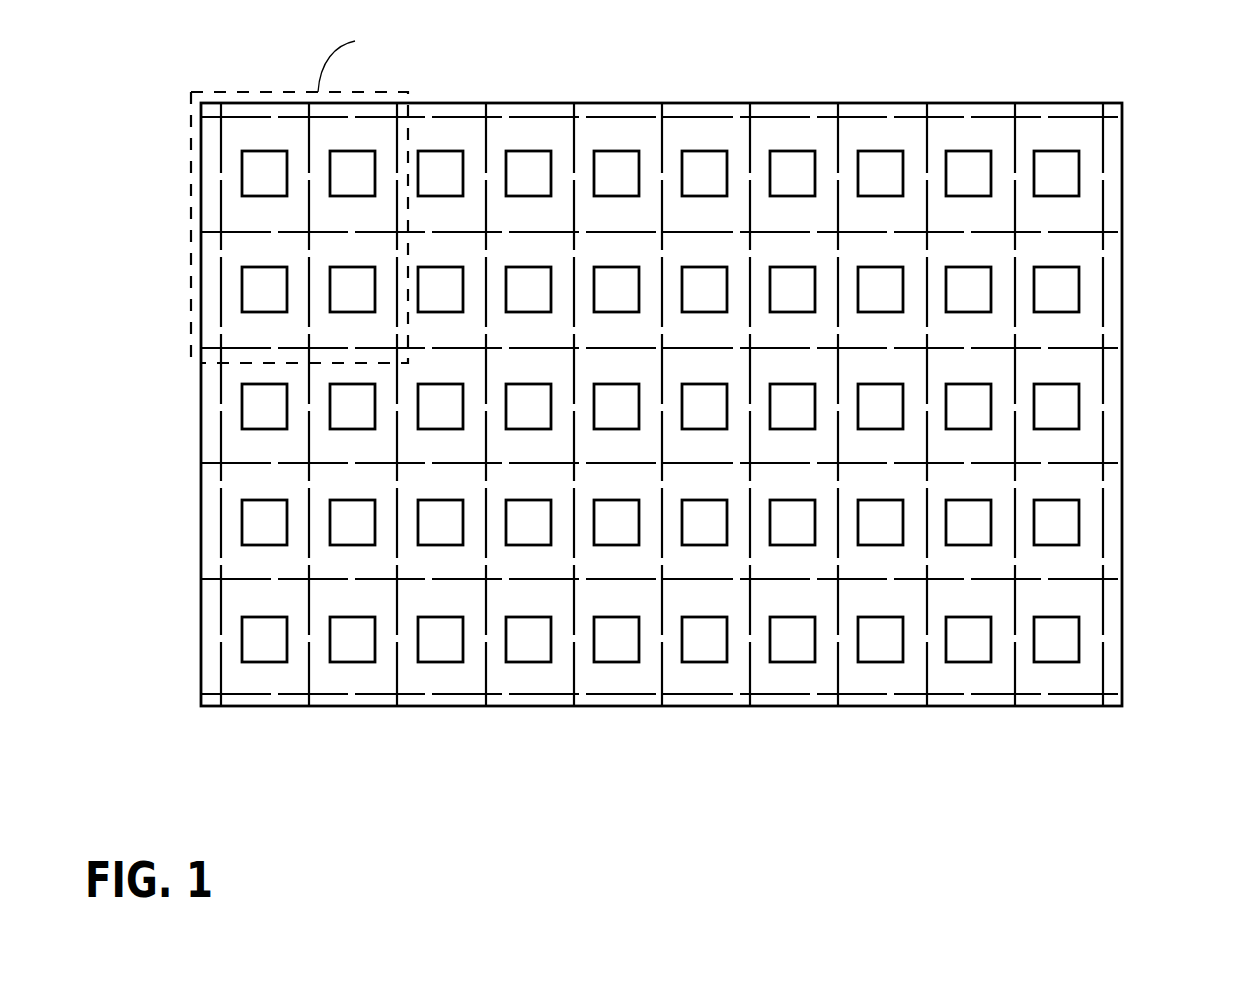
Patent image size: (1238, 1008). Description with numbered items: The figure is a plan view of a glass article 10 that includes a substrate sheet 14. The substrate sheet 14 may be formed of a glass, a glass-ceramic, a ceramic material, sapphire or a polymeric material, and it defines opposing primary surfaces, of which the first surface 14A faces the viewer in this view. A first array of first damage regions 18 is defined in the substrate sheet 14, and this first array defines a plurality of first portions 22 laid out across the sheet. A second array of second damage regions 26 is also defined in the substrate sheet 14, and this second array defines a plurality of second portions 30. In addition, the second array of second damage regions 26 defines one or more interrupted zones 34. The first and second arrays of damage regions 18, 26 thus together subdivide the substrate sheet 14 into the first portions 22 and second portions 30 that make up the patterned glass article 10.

The glass article 10 is at (1168, 185).
The substrate sheet 14 is at (201, 535).
The first surface 14A is at (250, 337).
The first damage regions 18 is at (241, 394).
The first portions 22 is at (256, 640).
The second damage regions 26 is at (221, 232).
The second portions 30 is at (259, 478).
The interrupted zones 34 is at (264, 232).